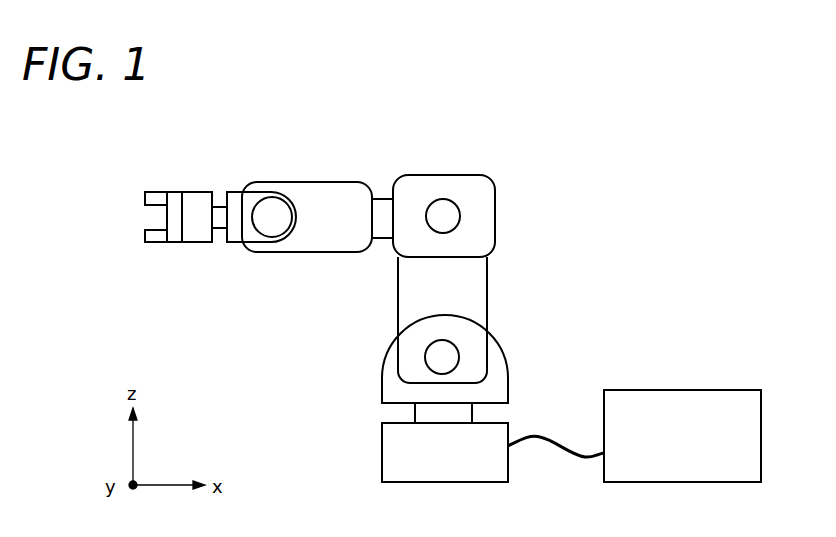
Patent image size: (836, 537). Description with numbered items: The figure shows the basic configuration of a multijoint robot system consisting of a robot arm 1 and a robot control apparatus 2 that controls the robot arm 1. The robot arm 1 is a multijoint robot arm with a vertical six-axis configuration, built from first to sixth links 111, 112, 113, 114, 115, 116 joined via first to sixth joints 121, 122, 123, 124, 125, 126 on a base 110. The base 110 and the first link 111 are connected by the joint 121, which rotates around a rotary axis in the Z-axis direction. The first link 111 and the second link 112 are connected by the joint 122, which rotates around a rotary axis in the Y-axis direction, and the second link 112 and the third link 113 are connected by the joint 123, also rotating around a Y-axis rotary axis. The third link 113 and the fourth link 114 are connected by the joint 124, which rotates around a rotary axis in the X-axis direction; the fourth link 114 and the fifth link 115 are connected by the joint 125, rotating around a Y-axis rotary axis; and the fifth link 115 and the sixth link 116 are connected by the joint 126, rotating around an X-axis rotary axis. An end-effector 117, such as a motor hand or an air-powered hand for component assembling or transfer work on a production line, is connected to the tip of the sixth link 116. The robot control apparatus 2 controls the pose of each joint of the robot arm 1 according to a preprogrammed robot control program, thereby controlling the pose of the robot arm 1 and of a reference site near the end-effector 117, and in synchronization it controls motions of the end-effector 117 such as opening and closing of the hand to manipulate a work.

The robot arm 1 is at (528, 107).
The robot control apparatus 2 is at (712, 400).
The base 110 is at (397, 455).
The first link 111 is at (502, 375).
The second link 112 is at (475, 282).
The third link 113 is at (485, 215).
The fourth link 114 is at (320, 198).
The fifth link 115 is at (235, 230).
The sixth link 116 is at (195, 233).
The end-effector 117 is at (172, 198).
The first joint 121 is at (417, 415).
The second joint 122 is at (445, 347).
The third joint 123 is at (443, 205).
The fourth joint 124 is at (383, 208).
The fifth joint 125 is at (270, 208).
The sixth joint 126 is at (218, 207).